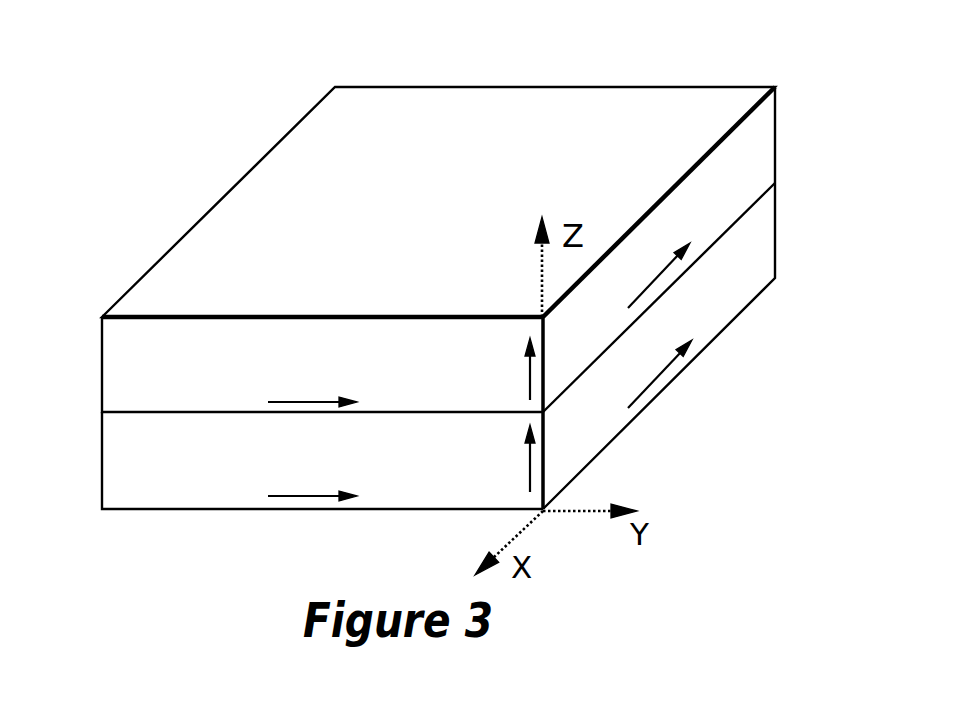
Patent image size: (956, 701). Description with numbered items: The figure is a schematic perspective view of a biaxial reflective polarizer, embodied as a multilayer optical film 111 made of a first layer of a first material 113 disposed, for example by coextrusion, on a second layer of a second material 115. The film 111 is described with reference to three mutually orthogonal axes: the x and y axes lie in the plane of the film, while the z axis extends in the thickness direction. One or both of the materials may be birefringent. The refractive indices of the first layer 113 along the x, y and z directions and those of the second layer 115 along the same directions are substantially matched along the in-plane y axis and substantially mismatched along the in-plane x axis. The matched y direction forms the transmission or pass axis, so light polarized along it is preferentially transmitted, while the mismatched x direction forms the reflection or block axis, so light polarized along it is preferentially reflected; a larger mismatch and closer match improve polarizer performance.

The multilayer optical film 111 is at (405, 263).
The first layer of a first material 113 is at (125, 365).
The second layer of a second material 115 is at (127, 464).